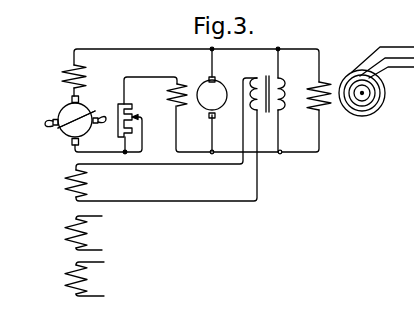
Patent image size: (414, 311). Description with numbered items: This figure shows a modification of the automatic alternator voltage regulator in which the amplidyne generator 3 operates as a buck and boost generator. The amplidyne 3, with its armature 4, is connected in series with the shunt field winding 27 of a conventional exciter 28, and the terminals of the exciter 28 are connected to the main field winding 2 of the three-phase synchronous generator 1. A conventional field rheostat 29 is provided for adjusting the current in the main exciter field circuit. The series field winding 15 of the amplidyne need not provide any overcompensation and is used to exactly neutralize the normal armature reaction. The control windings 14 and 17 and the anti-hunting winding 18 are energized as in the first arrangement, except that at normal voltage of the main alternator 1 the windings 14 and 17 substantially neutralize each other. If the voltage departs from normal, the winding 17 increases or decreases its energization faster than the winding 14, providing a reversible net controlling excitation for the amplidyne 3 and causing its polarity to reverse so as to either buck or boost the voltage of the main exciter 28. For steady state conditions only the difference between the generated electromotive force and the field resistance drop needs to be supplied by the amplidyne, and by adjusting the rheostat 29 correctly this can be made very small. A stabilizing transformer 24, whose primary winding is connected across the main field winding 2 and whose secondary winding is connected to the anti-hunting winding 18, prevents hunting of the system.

The three-phase synchronous generator 1 is at (386, 93).
The main field winding 2 is at (316, 86).
The amplidyne generator 3 is at (34, 132).
The armature 4 is at (86, 107).
The control winding 14 is at (89, 233).
The series field winding 15 is at (76, 74).
The control winding 17 is at (89, 279).
The anti-hunting winding 18 is at (88, 183).
The stabilizing transformer 24 is at (266, 76).
The shunt field winding 27 is at (180, 84).
The conventional exciter 28 is at (220, 82).
The field rheostat 29 is at (131, 104).